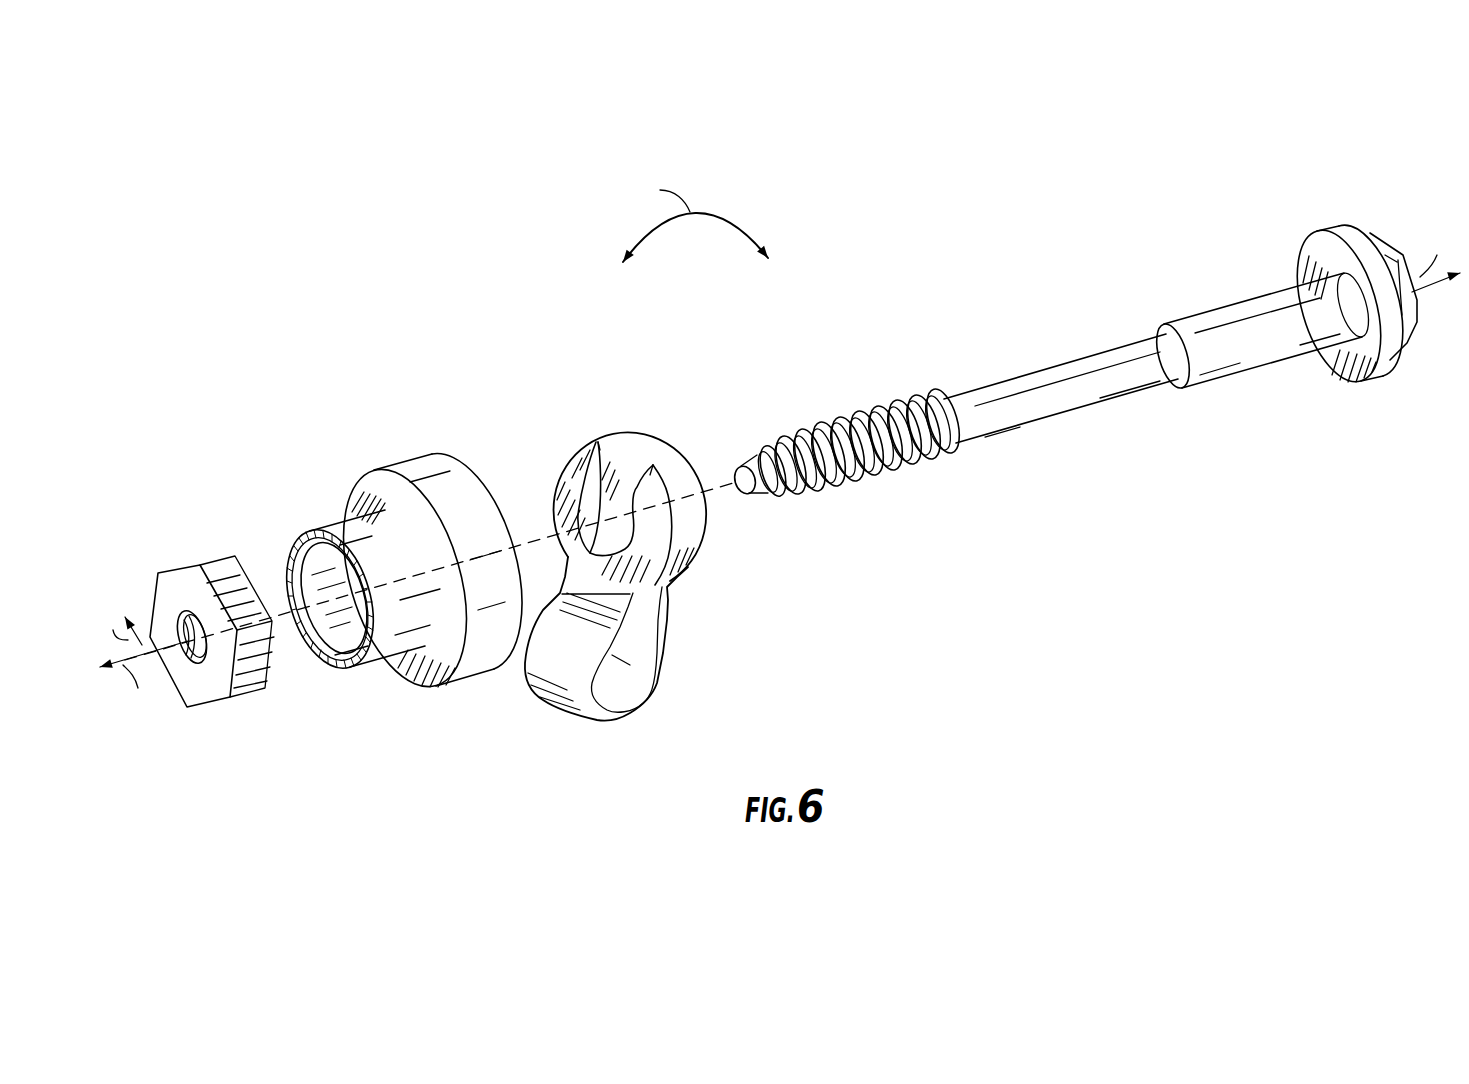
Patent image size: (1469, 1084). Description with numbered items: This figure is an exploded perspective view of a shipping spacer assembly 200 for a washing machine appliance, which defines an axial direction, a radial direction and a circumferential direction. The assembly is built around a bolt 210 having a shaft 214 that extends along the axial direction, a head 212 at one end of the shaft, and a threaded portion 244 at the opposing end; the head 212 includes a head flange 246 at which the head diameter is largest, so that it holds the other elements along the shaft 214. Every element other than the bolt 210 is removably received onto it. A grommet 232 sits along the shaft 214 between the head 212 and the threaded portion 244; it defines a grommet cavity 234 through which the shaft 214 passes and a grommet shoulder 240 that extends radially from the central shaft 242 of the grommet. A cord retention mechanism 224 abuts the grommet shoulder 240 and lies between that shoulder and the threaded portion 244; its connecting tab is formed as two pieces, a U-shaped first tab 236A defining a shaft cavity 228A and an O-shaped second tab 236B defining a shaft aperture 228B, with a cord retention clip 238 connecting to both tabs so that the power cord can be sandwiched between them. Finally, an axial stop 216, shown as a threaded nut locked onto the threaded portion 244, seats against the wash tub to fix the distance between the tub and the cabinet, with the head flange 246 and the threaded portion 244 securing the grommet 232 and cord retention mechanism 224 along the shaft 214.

The shipping spacer assembly 200 is at (1048, 663).
The bolt 210 is at (1022, 372).
The head 212 is at (1417, 322).
The shaft 214 is at (1118, 400).
The axial stop 216 is at (242, 706).
The cord retention mechanism 224 is at (673, 626).
The shaft cavity 228A is at (596, 498).
The shaft aperture 228B is at (641, 474).
The grommet 232 is at (452, 684).
The grommet cavity 234 is at (312, 593).
The first tab 236A is at (572, 457).
The second tab 236B is at (652, 430).
The cord retention clip 238 is at (597, 718).
The grommet shoulder 240 is at (375, 502).
The central shaft 242 is at (379, 660).
The threaded portion 244 is at (850, 483).
The head flange 246 is at (1337, 231).